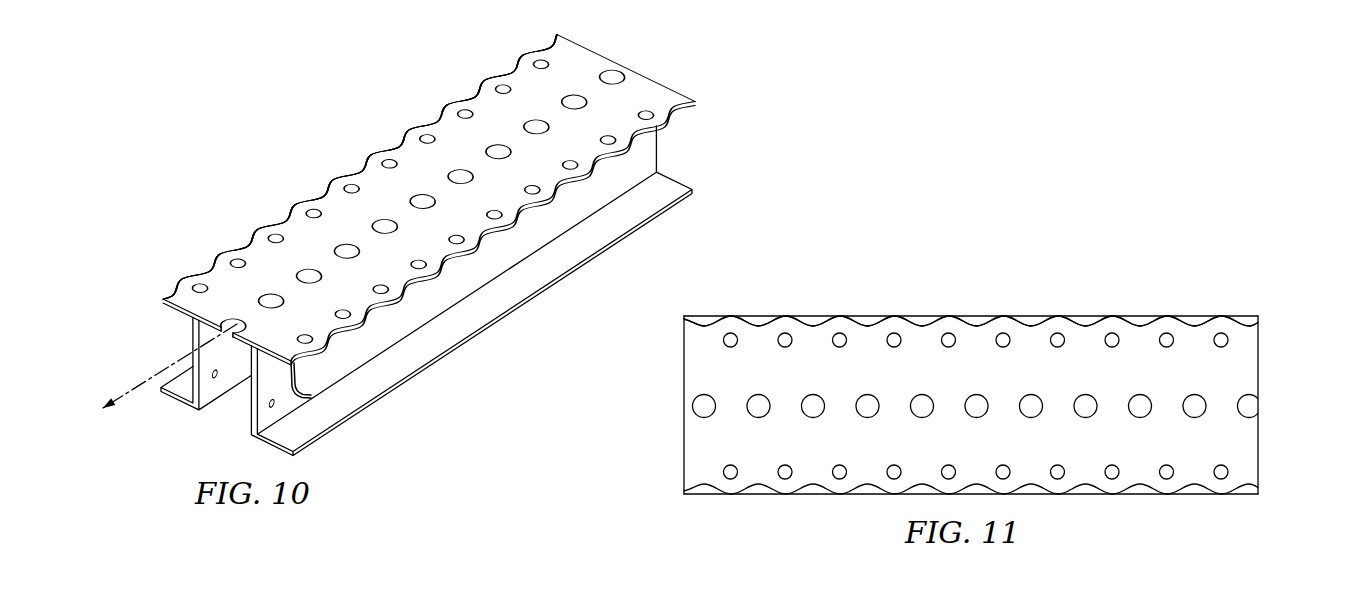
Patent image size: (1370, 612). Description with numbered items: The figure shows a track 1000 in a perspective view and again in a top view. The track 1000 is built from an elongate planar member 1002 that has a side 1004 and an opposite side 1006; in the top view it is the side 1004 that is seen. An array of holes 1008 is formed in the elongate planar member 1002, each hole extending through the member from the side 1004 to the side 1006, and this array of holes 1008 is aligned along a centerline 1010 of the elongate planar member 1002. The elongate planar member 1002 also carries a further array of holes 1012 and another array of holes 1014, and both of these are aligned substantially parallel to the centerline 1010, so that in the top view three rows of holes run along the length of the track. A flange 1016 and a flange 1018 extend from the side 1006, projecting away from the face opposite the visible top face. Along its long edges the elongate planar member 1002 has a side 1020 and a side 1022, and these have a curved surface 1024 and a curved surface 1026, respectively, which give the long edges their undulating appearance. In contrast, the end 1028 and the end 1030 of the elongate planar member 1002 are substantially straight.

In FIG. 10, the track 1000 is at (311, 110).
In FIG. 11, the track 1000 is at (1021, 257).
In FIG. 10, the elongate planar member 1002 is at (343, 203).
In FIG. 11, the elongate planar member 1002 is at (973, 347).
In FIG. 10, the side 1004 is at (247, 254).
In FIG. 11, the side 1004 is at (1137, 333).
In FIG. 10, the side 1006 is at (161, 299).
In FIG. 10, the array of holes 1008 is at (423, 200).
In FIG. 11, the array of holes 1008 is at (1222, 392).
In FIG. 10, the centerline 1010 is at (133, 401).
In FIG. 10, the array of holes 1012 is at (370, 176).
In FIG. 11, the array of holes 1012 is at (1240, 348).
In FIG. 10, the array of holes 1014 is at (475, 227).
In FIG. 11, the array of holes 1014 is at (1240, 466).
In FIG. 10, the flange 1016 is at (193, 339).
In FIG. 10, the flange 1018 is at (272, 390).
In FIG. 10, the side 1020 is at (290, 224).
In FIG. 11, the side 1020 is at (893, 318).
In FIG. 10, the side 1022 is at (412, 282).
In FIG. 11, the side 1022 is at (833, 496).
In FIG. 10, the curved surface 1024 is at (409, 133).
In FIG. 11, the curved surface 1024 is at (1052, 316).
In FIG. 10, the curved surface 1026 is at (480, 254).
In FIG. 11, the curved surface 1026 is at (1113, 497).
In FIG. 10, the end 1028 is at (650, 80).
In FIG. 11, the end 1028 is at (1260, 437).
In FIG. 10, the end 1030 is at (240, 340).
In FIG. 11, the end 1030 is at (684, 440).